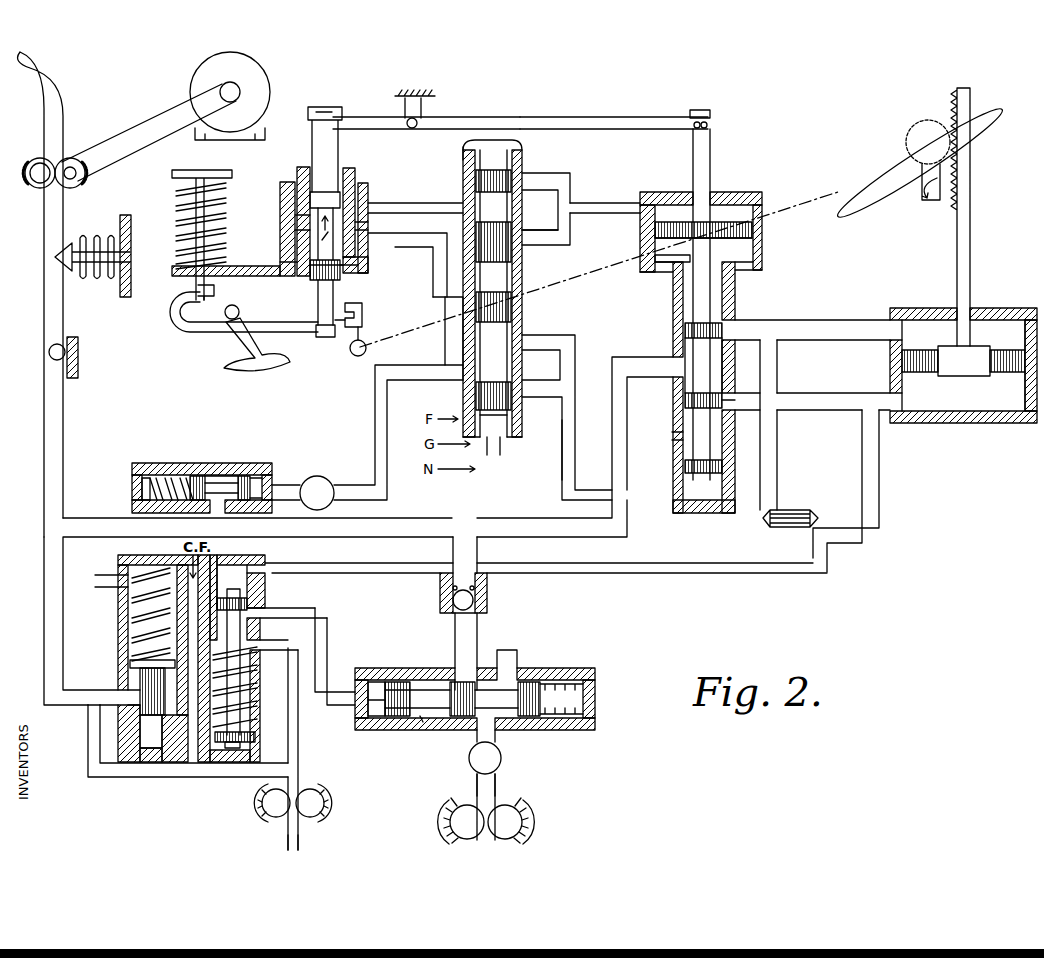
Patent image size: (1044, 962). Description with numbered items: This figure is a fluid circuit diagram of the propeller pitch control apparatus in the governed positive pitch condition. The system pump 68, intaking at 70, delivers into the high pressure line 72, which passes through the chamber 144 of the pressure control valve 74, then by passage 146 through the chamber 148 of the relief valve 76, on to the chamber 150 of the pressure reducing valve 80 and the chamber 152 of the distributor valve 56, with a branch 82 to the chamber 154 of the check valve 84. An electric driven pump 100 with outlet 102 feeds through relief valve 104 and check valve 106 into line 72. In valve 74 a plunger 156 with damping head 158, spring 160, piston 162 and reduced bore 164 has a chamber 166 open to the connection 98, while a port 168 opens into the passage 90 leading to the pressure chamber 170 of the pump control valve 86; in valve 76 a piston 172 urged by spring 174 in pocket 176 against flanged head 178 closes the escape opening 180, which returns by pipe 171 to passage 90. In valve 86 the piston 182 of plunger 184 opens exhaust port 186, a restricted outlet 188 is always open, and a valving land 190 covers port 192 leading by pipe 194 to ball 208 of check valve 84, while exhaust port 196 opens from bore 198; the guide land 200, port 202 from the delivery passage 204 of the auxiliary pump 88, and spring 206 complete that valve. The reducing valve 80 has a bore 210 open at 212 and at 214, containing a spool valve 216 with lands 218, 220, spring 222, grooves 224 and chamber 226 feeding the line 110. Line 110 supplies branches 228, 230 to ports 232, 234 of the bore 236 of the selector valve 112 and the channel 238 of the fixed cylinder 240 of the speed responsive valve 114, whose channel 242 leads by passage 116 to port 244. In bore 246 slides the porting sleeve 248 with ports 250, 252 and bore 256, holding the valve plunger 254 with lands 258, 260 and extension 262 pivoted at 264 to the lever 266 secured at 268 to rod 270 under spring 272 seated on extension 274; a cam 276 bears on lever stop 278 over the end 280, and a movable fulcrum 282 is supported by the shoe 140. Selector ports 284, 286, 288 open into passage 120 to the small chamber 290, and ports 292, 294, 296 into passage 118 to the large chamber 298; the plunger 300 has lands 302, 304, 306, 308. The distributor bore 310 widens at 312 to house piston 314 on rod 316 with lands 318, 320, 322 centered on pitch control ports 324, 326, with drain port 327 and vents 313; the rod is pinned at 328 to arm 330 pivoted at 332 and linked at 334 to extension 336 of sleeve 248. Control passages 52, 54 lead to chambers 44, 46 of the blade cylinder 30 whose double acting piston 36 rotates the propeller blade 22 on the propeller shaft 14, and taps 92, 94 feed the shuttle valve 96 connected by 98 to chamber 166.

The electric driven pump 100 is at (28, 165).
The outlet 102 is at (44, 218).
The relief valve 104 is at (55, 262).
The check valve 106 is at (48, 352).
The high pressure line 72 is at (44, 466).
The pressure reducing valve 80 is at (132, 505).
The spring 272 is at (176, 191).
The rod 270 is at (196, 229).
The extension 274 is at (190, 276).
The lever 266 is at (185, 325).
The movable fulcrum 282 is at (229, 319).
The shoe 140 is at (230, 368).
The securing point 268 is at (214, 290).
The porting sleeve 248 is at (300, 168).
The ports 250 is at (282, 192).
The ports 252 is at (295, 222).
The valve plunger 254 is at (282, 258).
The land 260 is at (310, 280).
The extension 262 is at (318, 305).
The land 258 is at (330, 195).
The annular channel 242 is at (356, 175).
The fixed cylinder 240 is at (368, 190).
The annular channel 238 is at (368, 226).
The bore 246 is at (368, 264).
The speed responsive valve 114 is at (368, 272).
The bore 256 is at (343, 275).
The end 280 is at (362, 314).
The pivot 264 is at (325, 337).
The blade operated cam 276 is at (356, 357).
The lever stop 278 is at (366, 345).
The land 306 is at (445, 330).
The branch 230 is at (430, 318).
The line 110 is at (433, 280).
The passage 116 is at (425, 203).
The extension 336 is at (316, 106).
The link 334 is at (340, 115).
The pivot 332 is at (420, 118).
The arm 330 is at (646, 117).
The pin 328 is at (712, 116).
The rod 316 is at (710, 155).
The land 302 is at (470, 158).
The port 244 is at (475, 200).
The bore 236 is at (510, 150).
The port 292 is at (545, 178).
The port 294 is at (570, 200).
The passage 118 is at (604, 214).
The selector valve 112 is at (522, 262).
The port 296 is at (530, 242).
The port 234 is at (512, 300).
The plunger 300 is at (507, 300).
The port 284 is at (545, 334).
The port 286 is at (560, 365).
The land 304 is at (490, 240).
The branch 228 is at (465, 375).
The port 232 is at (476, 395).
The port 288 is at (526, 412).
The land 308 is at (493, 452).
The passage 120 is at (562, 486).
The large pressure chamber 298 is at (690, 200).
The bore 310 is at (673, 292).
The land 318 is at (735, 318).
The vents 313 is at (762, 272).
The larger diameter 312 is at (762, 245).
The piston 314 is at (755, 222).
The distributor valve 56 is at (762, 256).
The propeller blade 22 is at (890, 195).
The propeller shaft 14 is at (938, 200).
The pressure chamber 46 is at (913, 328).
The control passage 54 is at (838, 320).
The control passage 52 is at (830, 393).
The pitch control port 324 is at (735, 325).
The pitch control port 326 is at (735, 395).
The chamber 152 is at (688, 385).
The land 320 is at (685, 400).
The port 327 is at (672, 440).
The land 322 is at (685, 466).
The tap 94 is at (777, 445).
The shuttle valve 96 is at (795, 510).
The pressure chamber 290 is at (701, 513).
The tap 92 is at (879, 478).
The connection 98 is at (362, 563).
The double acting piston 36 is at (1003, 372).
The pressure chamber 44 is at (925, 403).
The blade cylinder 30 is at (990, 423).
The land 218 is at (197, 476).
The spring 222 is at (150, 490).
The bore 210 is at (170, 482).
The chamber 150 is at (220, 480).
The spool valve 216 is at (240, 476).
The land 220 is at (260, 464).
The grooves 224 is at (262, 478).
The chamber 226 is at (262, 490).
The port 214 is at (285, 490).
The opening 212 is at (143, 492).
The chamber 166 is at (238, 575).
The branch 82 is at (477, 549).
The chamber 154 is at (440, 587).
The ball 208 is at (453, 601).
The check valve 84 is at (487, 596).
The piston 162 is at (248, 600).
The port 168 is at (265, 615).
The passage 90 is at (327, 618).
The spring 174 is at (132, 604).
The pocket 176 is at (132, 628).
The flanged head 178 is at (130, 664).
The piston 172 is at (148, 690).
The reduced bore 164 is at (242, 634).
The spring 160 is at (257, 668).
The chamber 144 is at (298, 645).
The restricted outlet 188 is at (390, 680).
The pipe 194 is at (455, 633).
The port 192 is at (470, 676).
The exhaust port 196 is at (515, 660).
The pump control valve 86 is at (578, 668).
The pressure chamber 170 is at (378, 685).
The piston 182 is at (405, 688).
The escape opening 180 is at (118, 698).
The exhaust port 186 is at (385, 722).
The plunger 184 is at (462, 718).
The bore 198 is at (423, 722).
The valving land 190 is at (462, 716).
The port 202 is at (490, 732).
The guide land 200 is at (540, 716).
The spring 206 is at (590, 730).
The delivery passage 204 is at (498, 780).
The auxiliary pump 88 is at (523, 822).
The chamber 148 is at (135, 770).
The relief valve 76 is at (158, 762).
The passage 146 is at (186, 762).
The pressure control valve 74 is at (232, 762).
The damping head 158 is at (250, 742).
The plunger 156 is at (228, 745).
The pipe 171 is at (130, 790).
The intake 70 is at (298, 830).
The system pump 68 is at (324, 815).